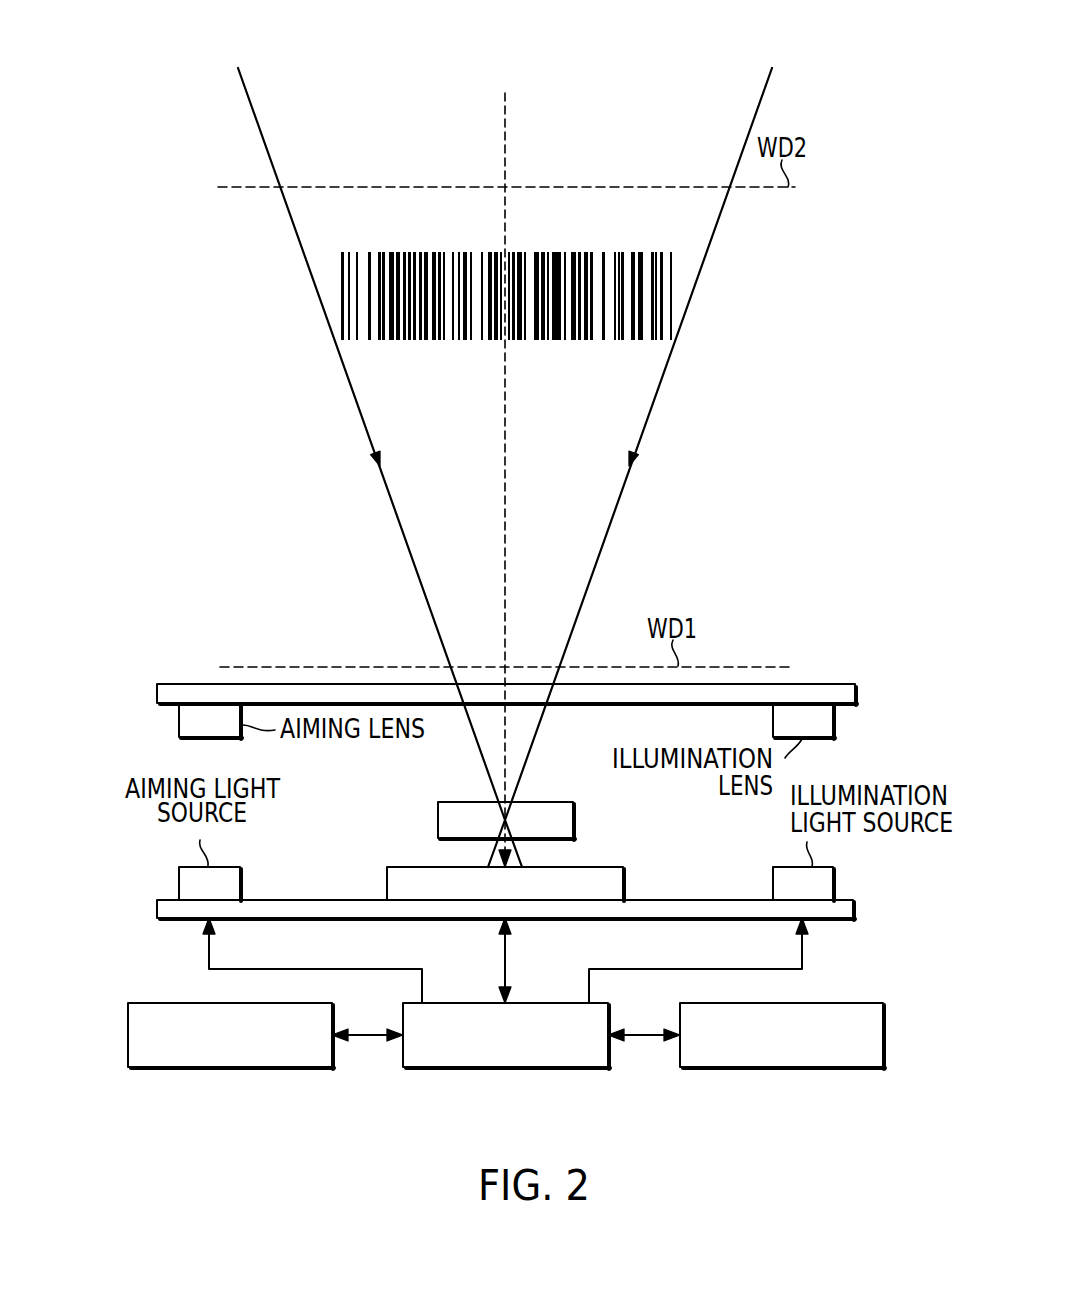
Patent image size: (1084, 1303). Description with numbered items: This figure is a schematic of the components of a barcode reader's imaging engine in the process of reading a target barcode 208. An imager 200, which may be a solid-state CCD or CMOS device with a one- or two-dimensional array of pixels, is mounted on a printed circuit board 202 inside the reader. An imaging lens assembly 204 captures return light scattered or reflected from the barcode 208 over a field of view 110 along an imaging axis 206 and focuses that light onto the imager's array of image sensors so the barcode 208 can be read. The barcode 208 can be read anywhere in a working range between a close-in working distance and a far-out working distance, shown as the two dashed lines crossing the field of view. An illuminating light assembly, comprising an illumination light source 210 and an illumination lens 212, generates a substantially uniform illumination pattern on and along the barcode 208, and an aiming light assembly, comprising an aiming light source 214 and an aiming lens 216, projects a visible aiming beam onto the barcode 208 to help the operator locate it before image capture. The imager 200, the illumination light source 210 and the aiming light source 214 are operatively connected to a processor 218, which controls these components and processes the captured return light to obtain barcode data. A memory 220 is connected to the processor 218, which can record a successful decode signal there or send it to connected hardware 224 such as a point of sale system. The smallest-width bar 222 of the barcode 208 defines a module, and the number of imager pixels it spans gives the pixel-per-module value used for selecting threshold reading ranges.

The field of view 110 is at (205, 135).
The imager 200 is at (590, 873).
The printed circuit board 202 is at (157, 908).
The imaging lens assembly 204 is at (437, 815).
The imaging axis 206 is at (505, 135).
The barcode 208 is at (375, 312).
The illumination light source 210 is at (835, 880).
The illumination lens 212 is at (835, 722).
The aiming light source 214 is at (179, 883).
The aiming lens 216 is at (179, 722).
The processor 218 is at (508, 1067).
The memory 220 is at (127, 1035).
The smallest-width bar 222 is at (672, 292).
The connected hardware 224 is at (785, 1067).